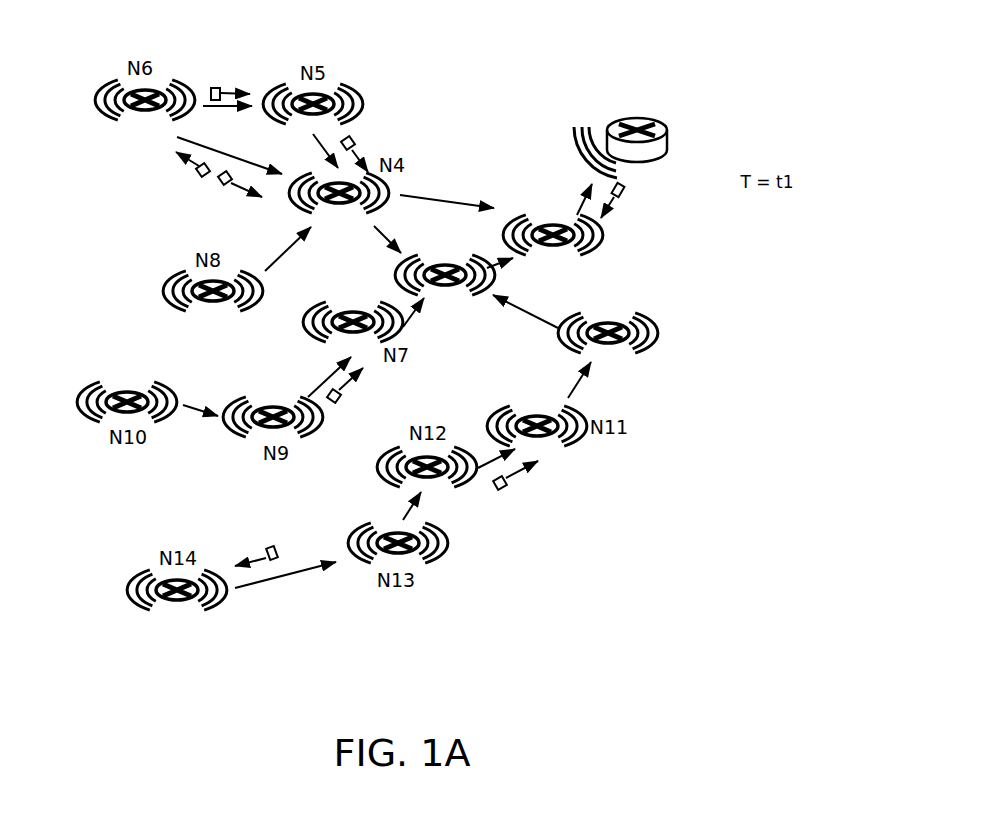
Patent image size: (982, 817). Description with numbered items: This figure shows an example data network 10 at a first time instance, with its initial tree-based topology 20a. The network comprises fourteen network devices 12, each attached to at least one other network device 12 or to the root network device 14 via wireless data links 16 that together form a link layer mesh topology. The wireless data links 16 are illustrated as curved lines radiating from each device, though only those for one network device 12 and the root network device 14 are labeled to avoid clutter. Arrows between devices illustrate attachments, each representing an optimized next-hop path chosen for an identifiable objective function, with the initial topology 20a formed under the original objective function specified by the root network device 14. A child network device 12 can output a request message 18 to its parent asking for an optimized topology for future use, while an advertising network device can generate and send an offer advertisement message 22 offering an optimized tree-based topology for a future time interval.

The data network 10 is at (745, 102).
The network device 12 is at (445, 265).
The root network device 14 is at (667, 131).
The wireless data link 16 is at (578, 137).
The request message 18 is at (214, 87).
The offer advertisement message 22 is at (204, 176).
The tree-based topology 20a is at (618, 389).